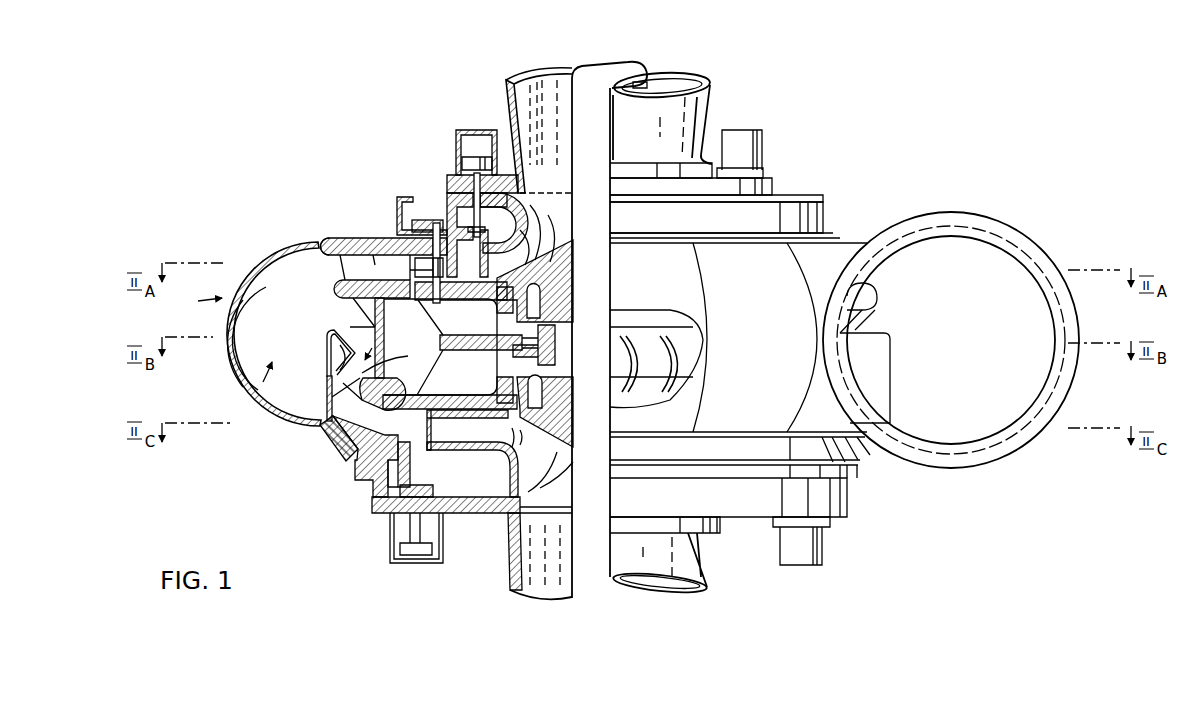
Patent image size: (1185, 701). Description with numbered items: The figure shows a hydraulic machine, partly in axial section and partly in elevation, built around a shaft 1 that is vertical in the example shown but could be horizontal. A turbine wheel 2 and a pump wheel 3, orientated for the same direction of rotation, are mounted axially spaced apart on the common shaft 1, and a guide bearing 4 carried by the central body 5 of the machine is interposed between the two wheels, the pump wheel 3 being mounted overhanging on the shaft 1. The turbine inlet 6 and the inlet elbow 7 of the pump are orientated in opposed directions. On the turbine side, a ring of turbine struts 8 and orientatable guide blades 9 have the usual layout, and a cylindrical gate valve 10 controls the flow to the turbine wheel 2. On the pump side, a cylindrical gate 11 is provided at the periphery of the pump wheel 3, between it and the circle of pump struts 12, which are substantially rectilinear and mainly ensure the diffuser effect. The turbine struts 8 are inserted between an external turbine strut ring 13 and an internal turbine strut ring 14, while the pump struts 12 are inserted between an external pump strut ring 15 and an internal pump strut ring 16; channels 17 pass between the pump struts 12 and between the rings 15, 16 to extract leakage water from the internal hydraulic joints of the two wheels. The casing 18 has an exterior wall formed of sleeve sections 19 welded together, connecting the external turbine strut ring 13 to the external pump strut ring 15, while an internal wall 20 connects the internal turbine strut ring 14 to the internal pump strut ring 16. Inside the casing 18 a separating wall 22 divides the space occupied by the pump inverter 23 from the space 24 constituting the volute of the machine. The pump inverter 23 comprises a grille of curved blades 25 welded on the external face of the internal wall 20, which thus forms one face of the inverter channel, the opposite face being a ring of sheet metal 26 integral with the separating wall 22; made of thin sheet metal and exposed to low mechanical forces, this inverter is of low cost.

The shaft 1 is at (589, 84).
The turbine wheel 2 is at (537, 218).
The pump wheel 3 is at (540, 458).
The guide bearing 4 is at (556, 339).
The central body 5 is at (473, 348).
The turbine inlet 6 is at (677, 102).
The inlet elbow 7 is at (684, 553).
The turbine struts 8 is at (367, 234).
The orientatable guide blades 9 is at (418, 300).
The cylindrical gate valve 10 is at (452, 299).
The cylindrical gate 11 is at (416, 470).
The pump struts 12 is at (330, 438).
The external turbine strut ring 13 is at (343, 236).
The internal turbine strut ring 14 is at (338, 290).
The external pump strut ring 15 is at (356, 465).
The internal pump strut ring 16 is at (392, 394).
The channels 17 is at (375, 421).
The casing 18 is at (194, 312).
The sleeve sections 19 is at (266, 256).
The internal wall 20 is at (375, 332).
The separating wall 22 is at (330, 353).
The pump inverter 23 is at (393, 347).
The volute 24 is at (262, 380).
The curved blades 25 is at (728, 346).
The ring of sheet metal 26 is at (352, 393).